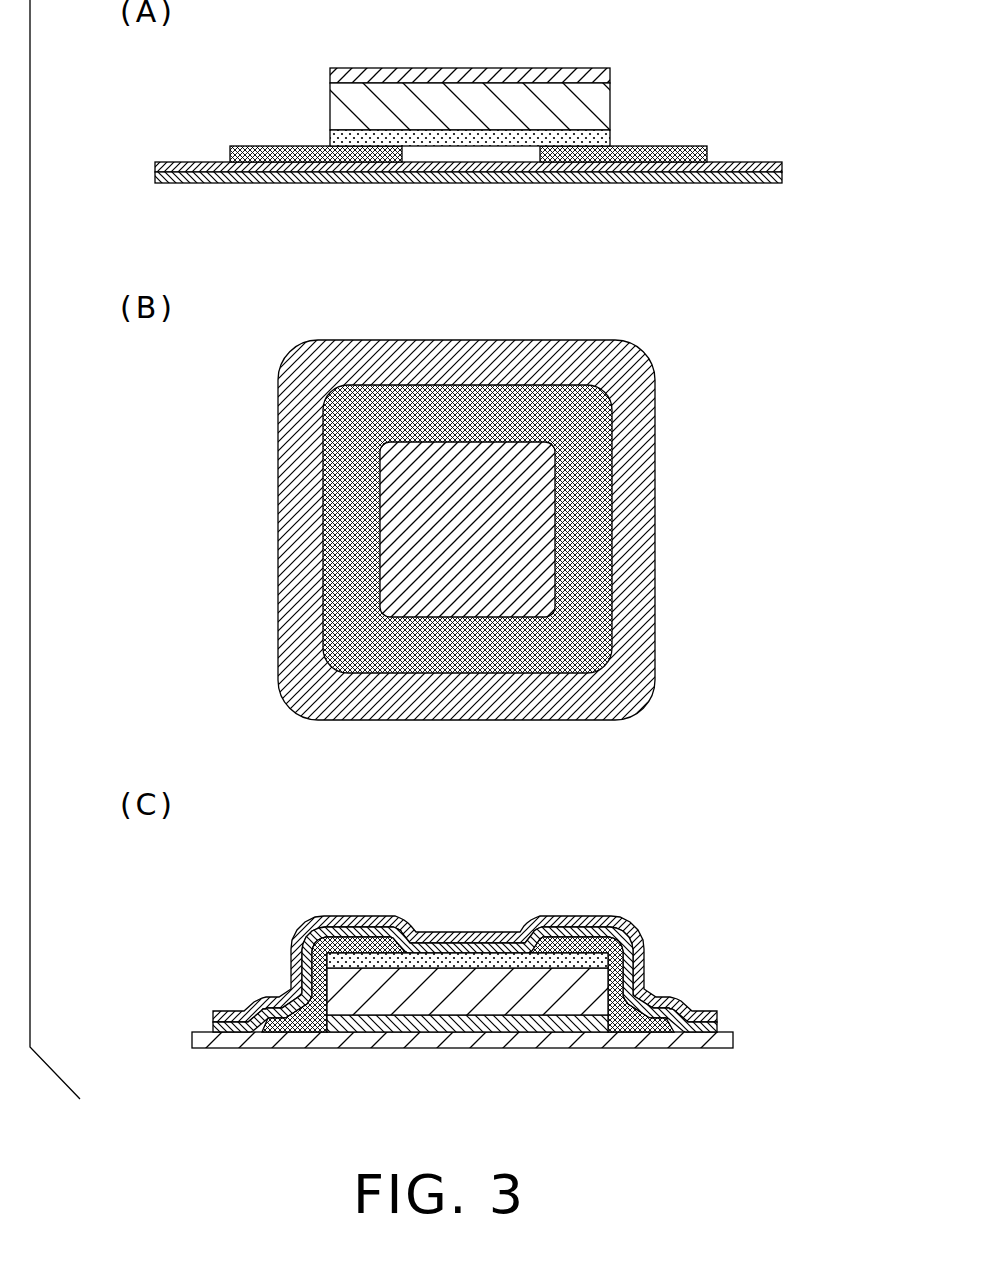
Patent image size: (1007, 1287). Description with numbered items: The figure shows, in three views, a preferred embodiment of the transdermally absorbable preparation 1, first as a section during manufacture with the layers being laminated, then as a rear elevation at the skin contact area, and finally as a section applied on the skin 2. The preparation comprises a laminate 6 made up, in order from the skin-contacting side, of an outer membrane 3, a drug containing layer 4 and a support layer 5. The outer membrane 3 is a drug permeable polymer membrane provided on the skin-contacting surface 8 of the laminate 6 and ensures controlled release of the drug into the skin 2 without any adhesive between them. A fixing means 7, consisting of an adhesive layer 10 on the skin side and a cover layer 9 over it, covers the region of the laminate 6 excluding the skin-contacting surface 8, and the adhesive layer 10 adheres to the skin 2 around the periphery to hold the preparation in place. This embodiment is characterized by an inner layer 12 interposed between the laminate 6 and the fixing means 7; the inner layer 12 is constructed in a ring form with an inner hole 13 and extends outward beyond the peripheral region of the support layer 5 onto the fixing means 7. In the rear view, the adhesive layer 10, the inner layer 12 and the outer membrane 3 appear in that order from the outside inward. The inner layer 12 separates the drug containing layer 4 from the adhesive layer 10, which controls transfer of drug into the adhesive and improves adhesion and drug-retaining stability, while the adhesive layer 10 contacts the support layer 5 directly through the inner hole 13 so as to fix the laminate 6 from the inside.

The transdermally absorbable preparation 1 is at (633, 58).
The skin 2 is at (377, 1037).
The outer membrane 3 is at (607, 73).
The drug containing layer 4 is at (600, 105).
The support layer 5 is at (350, 140).
The laminate 6 is at (330, 146).
The fixing means 7 is at (784, 162).
The skin-contacting surface 8 is at (610, 68).
The cover layer 9 is at (612, 177).
The adhesive layer 10 is at (687, 173).
The inner layer 12 is at (265, 170).
The inner hole 13 is at (400, 190).